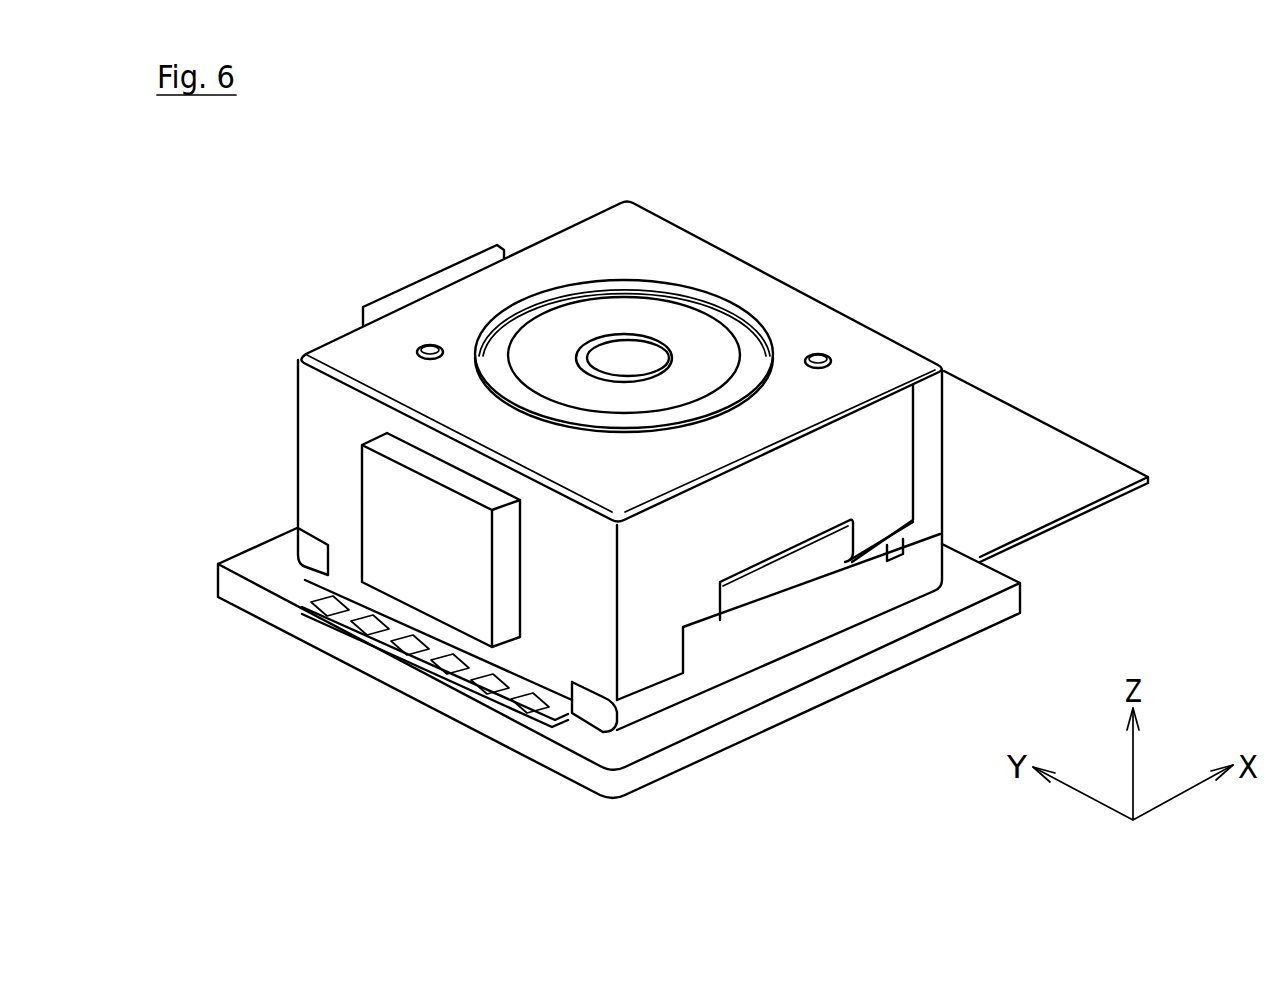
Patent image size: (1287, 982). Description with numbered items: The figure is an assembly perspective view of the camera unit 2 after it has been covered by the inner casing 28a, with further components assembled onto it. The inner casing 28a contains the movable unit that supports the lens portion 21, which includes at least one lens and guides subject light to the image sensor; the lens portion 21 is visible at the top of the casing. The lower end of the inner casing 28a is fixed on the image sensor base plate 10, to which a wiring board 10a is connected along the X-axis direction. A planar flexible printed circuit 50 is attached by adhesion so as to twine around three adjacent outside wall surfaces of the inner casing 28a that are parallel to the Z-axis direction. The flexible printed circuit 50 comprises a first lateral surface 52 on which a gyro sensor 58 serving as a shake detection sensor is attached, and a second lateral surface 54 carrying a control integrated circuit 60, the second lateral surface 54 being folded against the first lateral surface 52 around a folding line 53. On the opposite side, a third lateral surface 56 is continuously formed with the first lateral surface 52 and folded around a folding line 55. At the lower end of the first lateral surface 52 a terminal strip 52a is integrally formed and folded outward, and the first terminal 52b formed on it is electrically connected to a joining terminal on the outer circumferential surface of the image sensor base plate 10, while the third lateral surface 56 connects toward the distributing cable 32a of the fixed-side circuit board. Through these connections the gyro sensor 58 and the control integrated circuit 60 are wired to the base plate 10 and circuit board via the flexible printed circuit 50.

The camera unit 2 is at (682, 192).
The image sensor base plate 10 is at (897, 620).
The wiring board 10a is at (1052, 457).
The lens portion 21 is at (707, 338).
The inner casing 28a is at (893, 367).
The distributing cable 32a is at (790, 570).
The flexible printed circuit 50 is at (320, 433).
The first lateral surface 52 is at (325, 465).
The terminal strip 52a is at (567, 720).
The first terminal 52b is at (482, 801).
The folding line 53 is at (297, 390).
The second lateral surface 54 is at (337, 330).
The folding line 55 is at (620, 635).
The third lateral surface 56 is at (650, 583).
The gyro sensor 58 is at (385, 495).
The control integrated circuit 60 is at (435, 280).